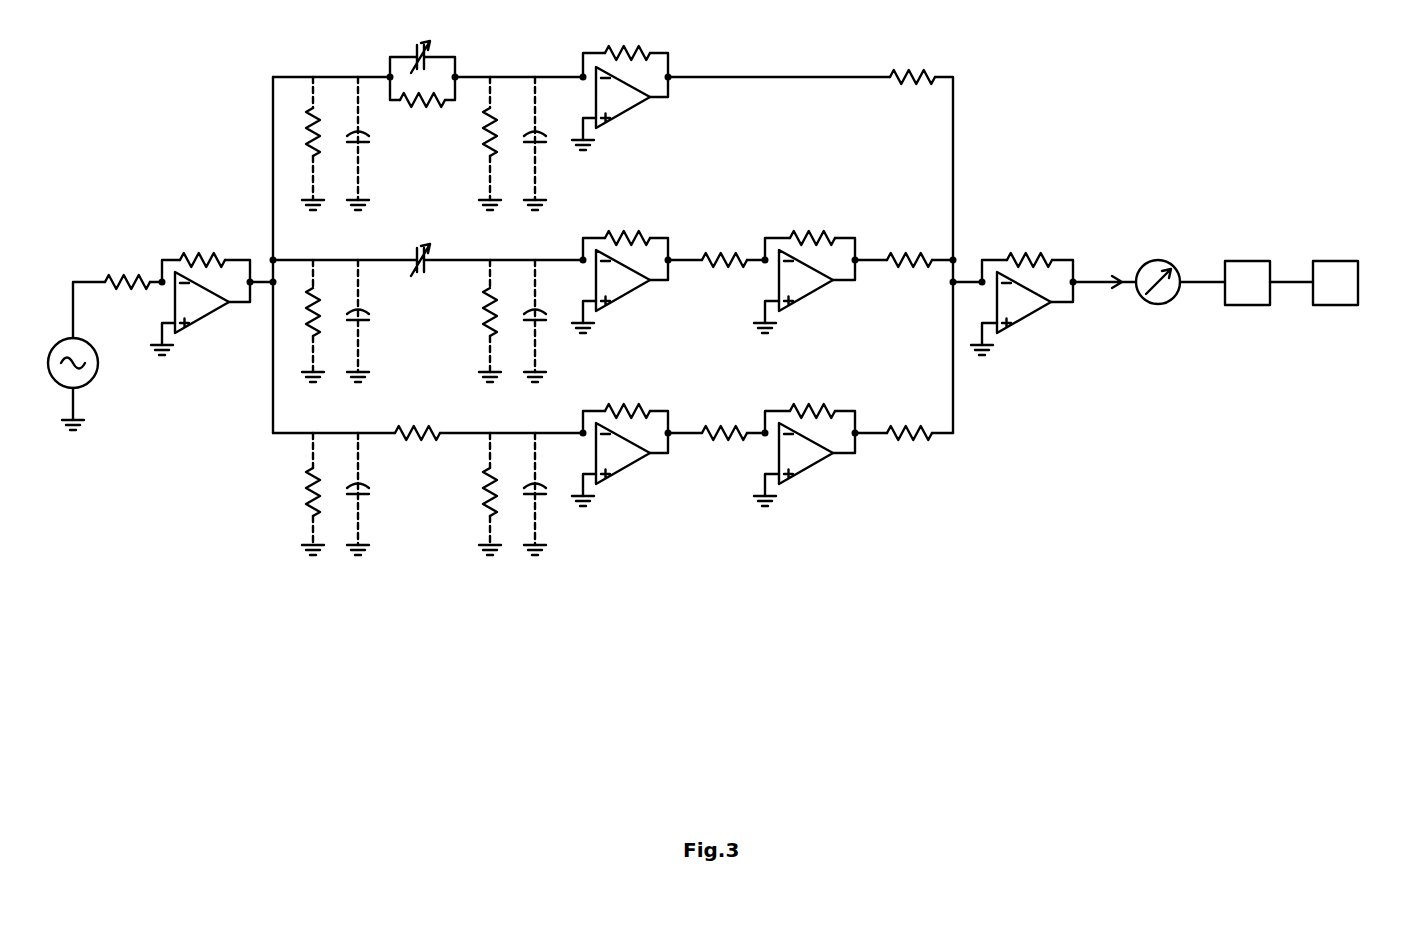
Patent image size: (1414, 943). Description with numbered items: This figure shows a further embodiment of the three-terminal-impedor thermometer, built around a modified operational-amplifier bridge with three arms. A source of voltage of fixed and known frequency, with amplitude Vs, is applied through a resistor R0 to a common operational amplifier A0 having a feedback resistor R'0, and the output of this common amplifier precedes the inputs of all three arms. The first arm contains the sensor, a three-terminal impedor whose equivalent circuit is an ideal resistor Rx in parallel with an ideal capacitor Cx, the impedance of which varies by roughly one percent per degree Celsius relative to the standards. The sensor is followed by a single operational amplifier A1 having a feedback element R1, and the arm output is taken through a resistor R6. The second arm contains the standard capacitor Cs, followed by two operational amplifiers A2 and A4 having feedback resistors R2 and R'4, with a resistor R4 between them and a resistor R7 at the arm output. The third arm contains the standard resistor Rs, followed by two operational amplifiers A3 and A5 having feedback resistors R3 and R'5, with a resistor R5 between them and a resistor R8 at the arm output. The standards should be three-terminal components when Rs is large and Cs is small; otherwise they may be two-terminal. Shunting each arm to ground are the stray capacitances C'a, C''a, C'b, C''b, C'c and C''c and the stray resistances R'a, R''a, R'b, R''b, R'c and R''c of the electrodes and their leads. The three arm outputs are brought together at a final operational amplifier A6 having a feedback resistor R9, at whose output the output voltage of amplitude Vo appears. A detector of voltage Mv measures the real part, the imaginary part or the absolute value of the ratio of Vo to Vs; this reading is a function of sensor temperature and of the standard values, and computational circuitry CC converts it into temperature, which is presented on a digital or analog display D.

The source voltage amplitude Vs is at (78, 372).
The input resistor R0 is at (121, 267).
The feedback resistor R'0 is at (199, 244).
The common operational amplifier A0 is at (202, 302).
The ideal capacitor Cx is at (414, 46).
The ideal resistor Rx is at (422, 114).
The stray resistance R'a is at (304, 143).
The stray capacitance C'a is at (370, 143).
The stray resistance R''a is at (479, 143).
The stray capacitance C''a is at (546, 143).
The feedback element R1 is at (623, 38).
The operational amplifier A1 is at (623, 97).
The summing resistor R6 is at (907, 62).
The standard capacitor Cs is at (414, 249).
The stray resistance R'b is at (303, 321).
The stray capacitance C'b is at (369, 321).
The stray resistance R''b is at (477, 321).
The stray capacitance C''b is at (545, 321).
The feedback resistor R2 is at (623, 226).
The operational amplifier A2 is at (623, 280).
The coupling resistor R4 is at (717, 246).
The feedback resistor R'4 is at (806, 224).
The operational amplifier A4 is at (806, 280).
The summing resistor R7 is at (905, 245).
The standard resistor Rs is at (416, 421).
The stray resistance R'c is at (303, 494).
The stray capacitance C'c is at (368, 494).
The stray resistance R''c is at (477, 494).
The stray capacitance C''c is at (544, 494).
The feedback resistor R3 is at (623, 398).
The operational amplifier A3 is at (623, 453).
The coupling resistor R5 is at (717, 419).
The feedback resistor R'5 is at (806, 399).
The operational amplifier A5 is at (806, 453).
The summing resistor R8 is at (904, 420).
The feedback resistor of A6 R9 is at (1027, 247).
The output operational amplifier A6 is at (1024, 302).
The output voltage amplitude Vo is at (1104, 270).
The detector of voltage Mv is at (1176, 256).
The computational circuitry CC is at (1246, 249).
The display D is at (1338, 249).